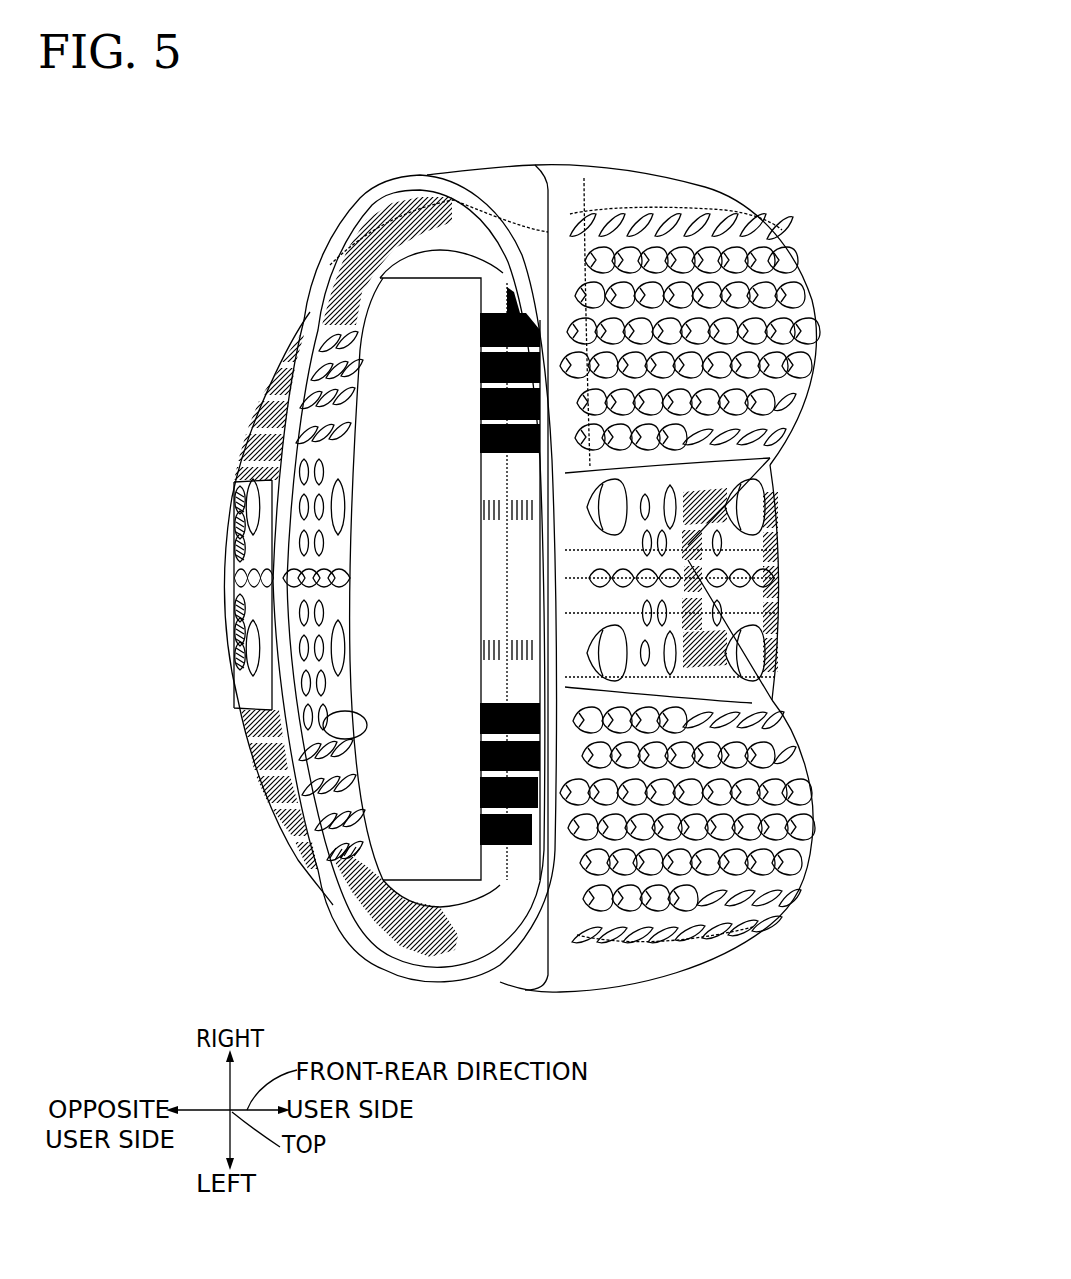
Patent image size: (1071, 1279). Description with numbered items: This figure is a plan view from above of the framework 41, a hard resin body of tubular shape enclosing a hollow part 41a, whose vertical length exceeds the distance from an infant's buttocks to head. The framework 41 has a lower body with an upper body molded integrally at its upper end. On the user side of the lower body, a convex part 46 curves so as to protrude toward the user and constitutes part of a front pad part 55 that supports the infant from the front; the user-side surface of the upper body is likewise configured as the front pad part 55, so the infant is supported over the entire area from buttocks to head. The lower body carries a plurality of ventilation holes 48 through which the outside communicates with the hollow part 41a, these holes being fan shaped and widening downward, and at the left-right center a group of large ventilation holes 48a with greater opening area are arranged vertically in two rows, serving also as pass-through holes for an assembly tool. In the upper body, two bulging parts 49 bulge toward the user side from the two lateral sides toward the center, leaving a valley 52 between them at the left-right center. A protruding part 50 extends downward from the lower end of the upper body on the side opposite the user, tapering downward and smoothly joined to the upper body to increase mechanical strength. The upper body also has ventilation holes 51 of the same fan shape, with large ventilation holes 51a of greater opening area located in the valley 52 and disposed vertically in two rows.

The framework 41 is at (298, 190).
The hollow part 41a is at (345, 742).
The convex part 46 is at (752, 580).
The front pad part 55 is at (775, 673).
The ventilation holes 48 is at (780, 615).
The large ventilation holes 48a is at (775, 538).
The bulging parts 49 is at (765, 285).
The protruding part 50 is at (268, 703).
The ventilation holes 51 is at (704, 885).
The large ventilation holes 51a is at (610, 507).
The valley 52 is at (745, 510).